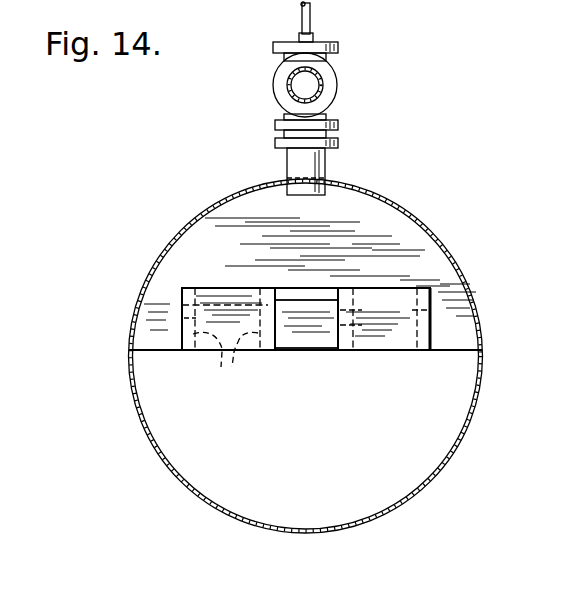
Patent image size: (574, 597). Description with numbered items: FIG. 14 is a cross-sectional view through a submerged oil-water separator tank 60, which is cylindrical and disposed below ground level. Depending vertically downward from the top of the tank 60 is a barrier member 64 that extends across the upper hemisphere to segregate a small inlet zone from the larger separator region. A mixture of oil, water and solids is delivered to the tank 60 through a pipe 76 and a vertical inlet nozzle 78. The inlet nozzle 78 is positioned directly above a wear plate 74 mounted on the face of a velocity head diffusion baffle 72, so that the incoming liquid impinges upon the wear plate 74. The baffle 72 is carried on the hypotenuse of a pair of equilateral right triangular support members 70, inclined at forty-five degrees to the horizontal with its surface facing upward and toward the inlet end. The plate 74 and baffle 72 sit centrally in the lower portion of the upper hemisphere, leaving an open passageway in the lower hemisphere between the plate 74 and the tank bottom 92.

The oil-water separator tank 60 is at (192, 216).
The barrier member 64 is at (380, 228).
The triangular support members 70 is at (306, 336).
The velocity head diffusion baffle 72 is at (395, 320).
The wear plate 74 is at (324, 334).
The pipe 76 is at (322, 85).
The vertical inlet nozzle 78 is at (325, 162).
The tank bottom 92 is at (308, 531).